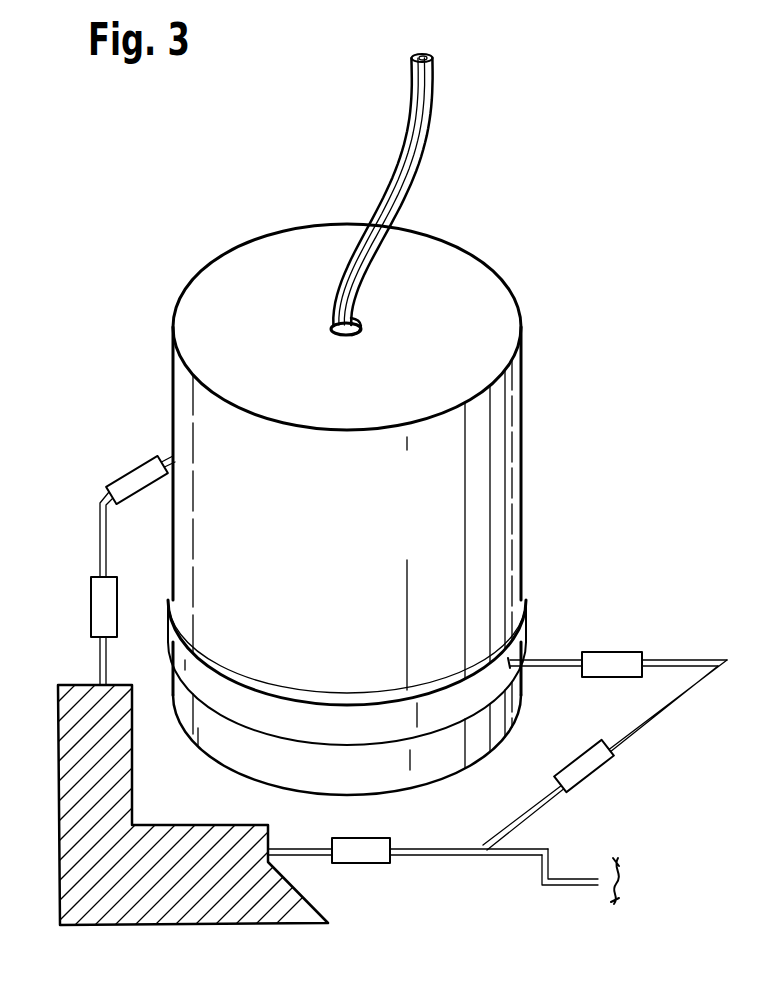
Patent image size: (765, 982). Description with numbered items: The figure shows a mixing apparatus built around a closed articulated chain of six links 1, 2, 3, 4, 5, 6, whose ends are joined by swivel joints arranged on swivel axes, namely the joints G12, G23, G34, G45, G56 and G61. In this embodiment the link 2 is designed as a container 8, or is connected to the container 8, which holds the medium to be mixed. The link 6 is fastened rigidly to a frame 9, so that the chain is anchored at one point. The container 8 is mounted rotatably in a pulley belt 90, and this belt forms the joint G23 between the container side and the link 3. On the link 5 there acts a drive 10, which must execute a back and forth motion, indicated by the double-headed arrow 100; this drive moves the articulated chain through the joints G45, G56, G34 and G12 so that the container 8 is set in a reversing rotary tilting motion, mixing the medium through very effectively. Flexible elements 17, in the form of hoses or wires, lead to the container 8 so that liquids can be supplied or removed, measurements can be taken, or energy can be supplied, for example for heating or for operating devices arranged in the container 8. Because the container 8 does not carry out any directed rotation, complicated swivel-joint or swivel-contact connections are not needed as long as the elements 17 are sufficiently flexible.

The link 1 is at (100, 530).
The link 2 is at (167, 455).
The link 3 is at (553, 663).
The link 4 is at (677, 700).
The link 5 is at (440, 857).
The link 6 is at (102, 662).
The container 8 is at (512, 462).
The frame 9 is at (77, 780).
The drive 10 is at (545, 873).
The flexible elements 17 is at (428, 136).
The pulley belt 90 is at (428, 722).
The double-headed arrow 100 is at (626, 888).
The swivel joint G12 is at (123, 482).
The swivel joint G23 is at (523, 628).
The swivel joint G34 is at (608, 662).
The swivel joint G45 is at (585, 768).
The swivel joint G56 is at (362, 855).
The swivel joint G61 is at (100, 603).